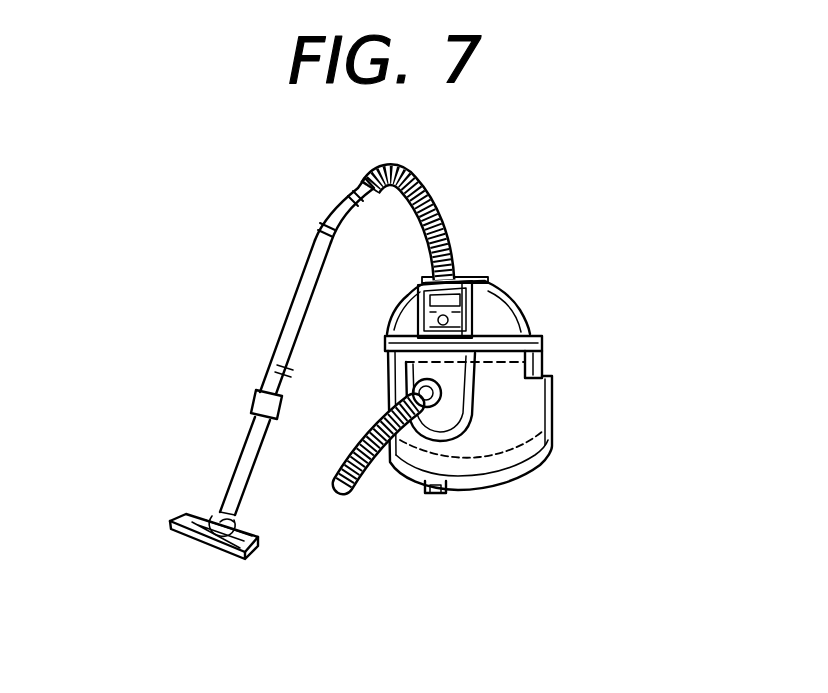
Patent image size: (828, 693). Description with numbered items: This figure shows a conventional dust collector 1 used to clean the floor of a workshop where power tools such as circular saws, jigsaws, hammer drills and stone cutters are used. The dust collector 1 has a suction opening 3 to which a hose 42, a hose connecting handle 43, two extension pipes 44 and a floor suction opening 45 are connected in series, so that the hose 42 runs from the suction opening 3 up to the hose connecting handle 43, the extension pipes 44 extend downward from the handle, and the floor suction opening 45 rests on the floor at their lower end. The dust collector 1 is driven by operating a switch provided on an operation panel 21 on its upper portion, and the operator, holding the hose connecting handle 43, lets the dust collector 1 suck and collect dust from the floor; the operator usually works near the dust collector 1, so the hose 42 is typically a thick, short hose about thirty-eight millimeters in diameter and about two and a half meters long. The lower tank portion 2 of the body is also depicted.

The dust collector 1 is at (524, 305).
The dust collecting tank 2 is at (496, 440).
The suction opening 3 is at (392, 381).
The operation panel 21 is at (418, 288).
The hose 42 is at (452, 214).
The hose connecting handle 43 is at (331, 210).
The extension pipes 44 is at (290, 307).
The floor suction opening 45 is at (172, 516).